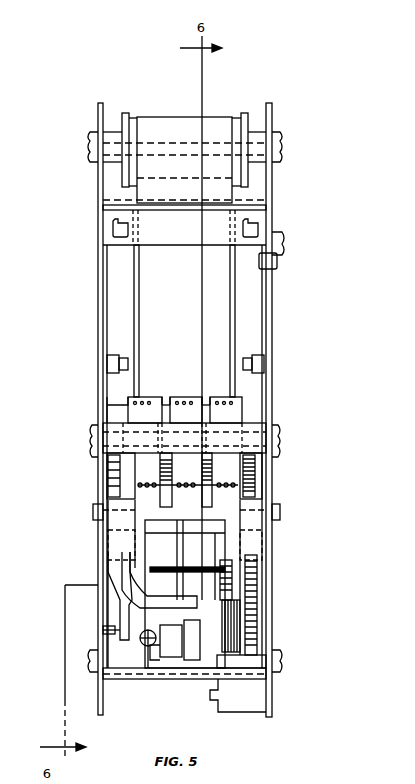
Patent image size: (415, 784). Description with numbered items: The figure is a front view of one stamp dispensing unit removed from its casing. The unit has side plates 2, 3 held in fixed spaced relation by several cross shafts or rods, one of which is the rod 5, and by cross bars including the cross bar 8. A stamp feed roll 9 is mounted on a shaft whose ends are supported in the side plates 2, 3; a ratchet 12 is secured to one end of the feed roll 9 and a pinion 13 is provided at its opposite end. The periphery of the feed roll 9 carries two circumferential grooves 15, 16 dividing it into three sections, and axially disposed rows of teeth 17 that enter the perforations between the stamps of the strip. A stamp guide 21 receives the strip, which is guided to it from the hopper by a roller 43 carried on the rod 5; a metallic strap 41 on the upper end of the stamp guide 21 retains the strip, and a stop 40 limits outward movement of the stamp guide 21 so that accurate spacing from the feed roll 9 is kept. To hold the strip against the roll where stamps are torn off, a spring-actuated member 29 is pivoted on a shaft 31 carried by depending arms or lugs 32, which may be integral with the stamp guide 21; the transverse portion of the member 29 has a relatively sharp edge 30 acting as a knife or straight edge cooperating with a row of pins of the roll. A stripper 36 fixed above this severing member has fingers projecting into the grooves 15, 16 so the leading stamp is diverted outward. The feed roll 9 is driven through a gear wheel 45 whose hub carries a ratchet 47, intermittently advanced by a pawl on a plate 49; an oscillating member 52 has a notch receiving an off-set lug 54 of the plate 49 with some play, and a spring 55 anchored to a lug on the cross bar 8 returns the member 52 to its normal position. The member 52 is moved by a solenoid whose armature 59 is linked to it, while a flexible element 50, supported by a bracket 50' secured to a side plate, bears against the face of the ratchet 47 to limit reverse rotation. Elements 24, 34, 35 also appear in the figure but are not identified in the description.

The side plate 2 is at (97, 290).
The side plate 3 is at (273, 300).
The cross shaft or rod 5 is at (118, 136).
The cross bar 8 is at (245, 683).
The stamp feed roll 9 is at (182, 392).
The ratchet 12 is at (118, 403).
The pinion 13 is at (255, 483).
The circumferential groove 15 is at (164, 400).
The circumferential groove 16 is at (207, 400).
The rows of teeth 17 is at (144, 400).
The stamp guide 21 is at (250, 325).
The mounting bolt 24 is at (95, 511).
The spring-actuated member 29 is at (135, 490).
The sharp edge 30 is at (233, 487).
The shaft 31 is at (165, 567).
The depending arms or lugs 32 is at (130, 545).
The lever 34 is at (125, 603).
The stop 35 is at (108, 630).
The stripper 36 is at (165, 462).
The stop 40 is at (270, 262).
The metallic strap 41 is at (222, 230).
The roller 43 is at (244, 113).
The gear wheel 45 is at (252, 620).
The ratchet 47 is at (230, 595).
The plate 49 is at (233, 648).
The flexible element 50 is at (284, 664).
The bracket 50' is at (244, 709).
The member 52 is at (183, 660).
The off-set lug 54 is at (190, 602).
The spring 55 is at (140, 660).
The armature 59 is at (193, 657).